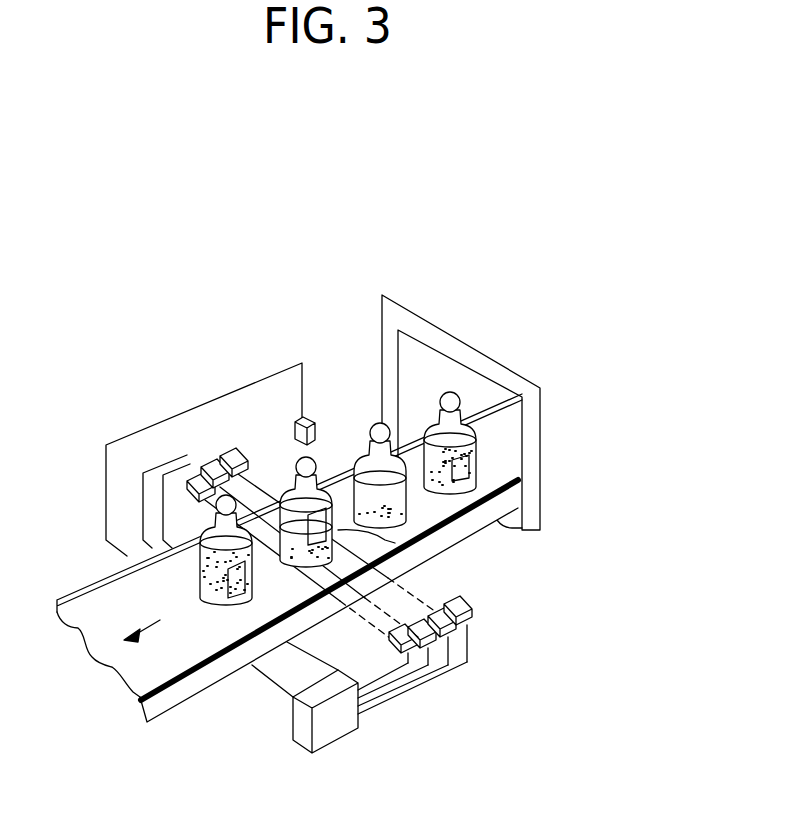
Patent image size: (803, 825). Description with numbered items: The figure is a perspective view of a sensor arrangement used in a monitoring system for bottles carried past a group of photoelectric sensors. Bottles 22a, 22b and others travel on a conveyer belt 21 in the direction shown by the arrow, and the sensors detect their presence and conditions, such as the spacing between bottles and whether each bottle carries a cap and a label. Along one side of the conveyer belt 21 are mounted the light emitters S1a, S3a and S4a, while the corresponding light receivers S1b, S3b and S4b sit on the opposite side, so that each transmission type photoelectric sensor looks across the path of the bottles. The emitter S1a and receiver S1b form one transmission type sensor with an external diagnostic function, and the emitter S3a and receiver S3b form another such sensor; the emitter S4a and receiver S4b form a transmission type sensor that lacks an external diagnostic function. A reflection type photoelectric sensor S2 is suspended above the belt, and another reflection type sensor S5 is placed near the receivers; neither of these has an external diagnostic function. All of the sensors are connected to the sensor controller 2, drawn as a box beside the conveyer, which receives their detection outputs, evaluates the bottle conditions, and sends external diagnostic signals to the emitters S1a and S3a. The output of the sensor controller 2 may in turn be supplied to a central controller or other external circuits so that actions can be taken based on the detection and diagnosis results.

The sensor controller 2 is at (302, 728).
The conveyer belt 21 is at (90, 627).
The bottle 22a is at (212, 604).
The bottle 22b is at (395, 543).
The light emitter S1a is at (187, 467).
The light receiver S1b is at (396, 647).
The reflection type photoelectric sensor S2 is at (311, 419).
The light emitter S3a is at (213, 458).
The light receiver S3b is at (436, 645).
The light emitter S4a is at (238, 455).
The light receiver S4b is at (448, 630).
The reflection type photoelectric sensor S5 is at (470, 606).